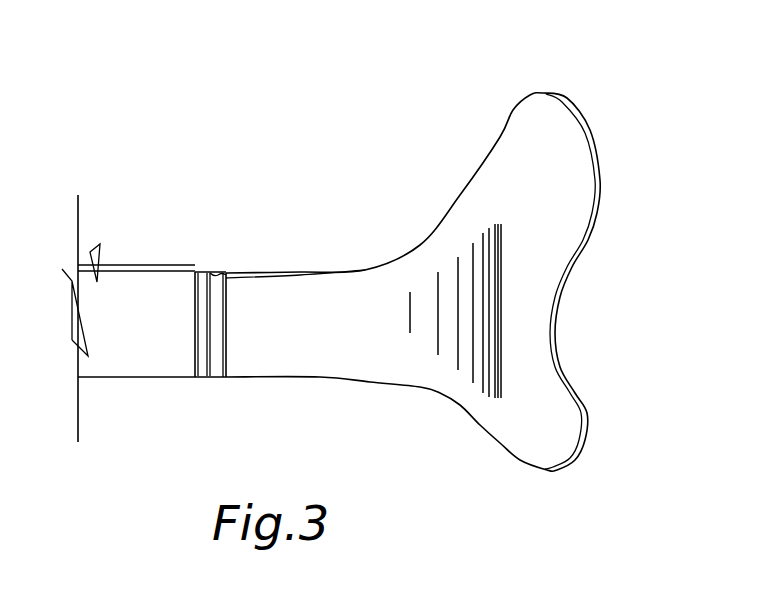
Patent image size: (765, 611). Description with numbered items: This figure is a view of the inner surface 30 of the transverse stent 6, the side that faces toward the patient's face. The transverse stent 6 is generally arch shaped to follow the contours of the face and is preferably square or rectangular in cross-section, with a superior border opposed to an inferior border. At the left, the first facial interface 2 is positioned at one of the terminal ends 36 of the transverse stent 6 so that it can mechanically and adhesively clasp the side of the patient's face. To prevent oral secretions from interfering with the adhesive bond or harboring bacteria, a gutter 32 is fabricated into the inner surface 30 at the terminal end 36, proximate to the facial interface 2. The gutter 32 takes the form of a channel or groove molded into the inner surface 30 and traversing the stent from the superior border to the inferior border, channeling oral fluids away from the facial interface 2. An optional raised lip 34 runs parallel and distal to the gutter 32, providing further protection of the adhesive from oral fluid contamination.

The first facial interface 2 is at (541, 218).
The transverse stent 6 is at (99, 248).
The inner surface 30 is at (122, 362).
The gutter 32 is at (200, 277).
The raised lip 34 is at (217, 376).
The terminal end 36 is at (119, 283).